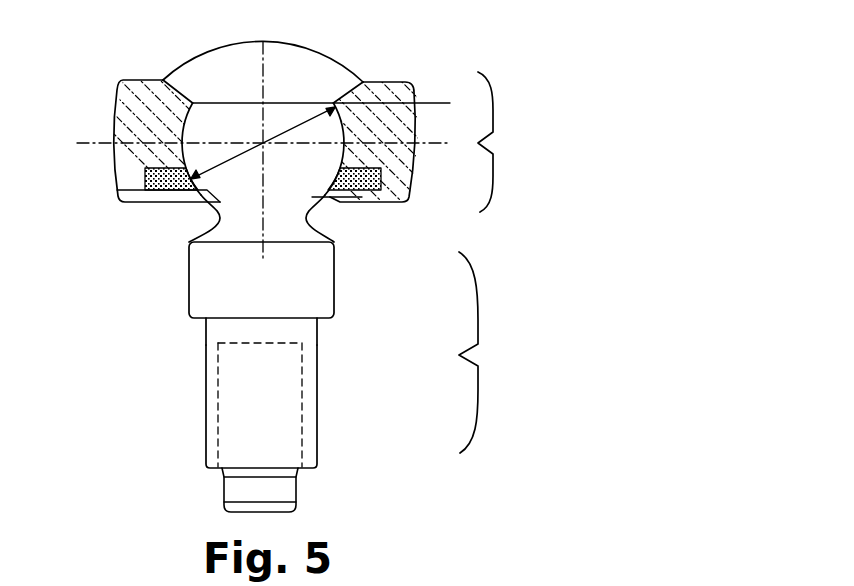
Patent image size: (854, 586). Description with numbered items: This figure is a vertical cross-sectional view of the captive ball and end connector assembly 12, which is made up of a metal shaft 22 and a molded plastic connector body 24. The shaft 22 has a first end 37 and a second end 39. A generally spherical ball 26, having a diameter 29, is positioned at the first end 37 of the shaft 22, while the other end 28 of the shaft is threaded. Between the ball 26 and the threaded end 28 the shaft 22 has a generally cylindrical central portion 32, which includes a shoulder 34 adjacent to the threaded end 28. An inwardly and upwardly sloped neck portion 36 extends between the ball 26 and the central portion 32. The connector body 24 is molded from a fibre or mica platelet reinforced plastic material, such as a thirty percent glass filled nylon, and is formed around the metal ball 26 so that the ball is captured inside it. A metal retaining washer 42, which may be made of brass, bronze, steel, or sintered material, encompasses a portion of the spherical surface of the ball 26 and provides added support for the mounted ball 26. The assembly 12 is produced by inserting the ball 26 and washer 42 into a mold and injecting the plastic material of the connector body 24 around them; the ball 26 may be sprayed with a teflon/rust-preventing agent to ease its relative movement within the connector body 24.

The captive ball and end connector assembly 12 is at (330, 33).
The shaft 22 is at (188, 334).
The connector body 24 is at (136, 104).
The ball 26 is at (203, 143).
The threaded end 28 is at (318, 418).
The diameter 29 is at (168, 189).
The central portion 32 is at (247, 296).
The shoulder 34 is at (322, 322).
The neck portion 36 is at (334, 242).
The first end 37 is at (504, 142).
The second end 39 is at (485, 352).
The retaining washer 42 is at (168, 188).